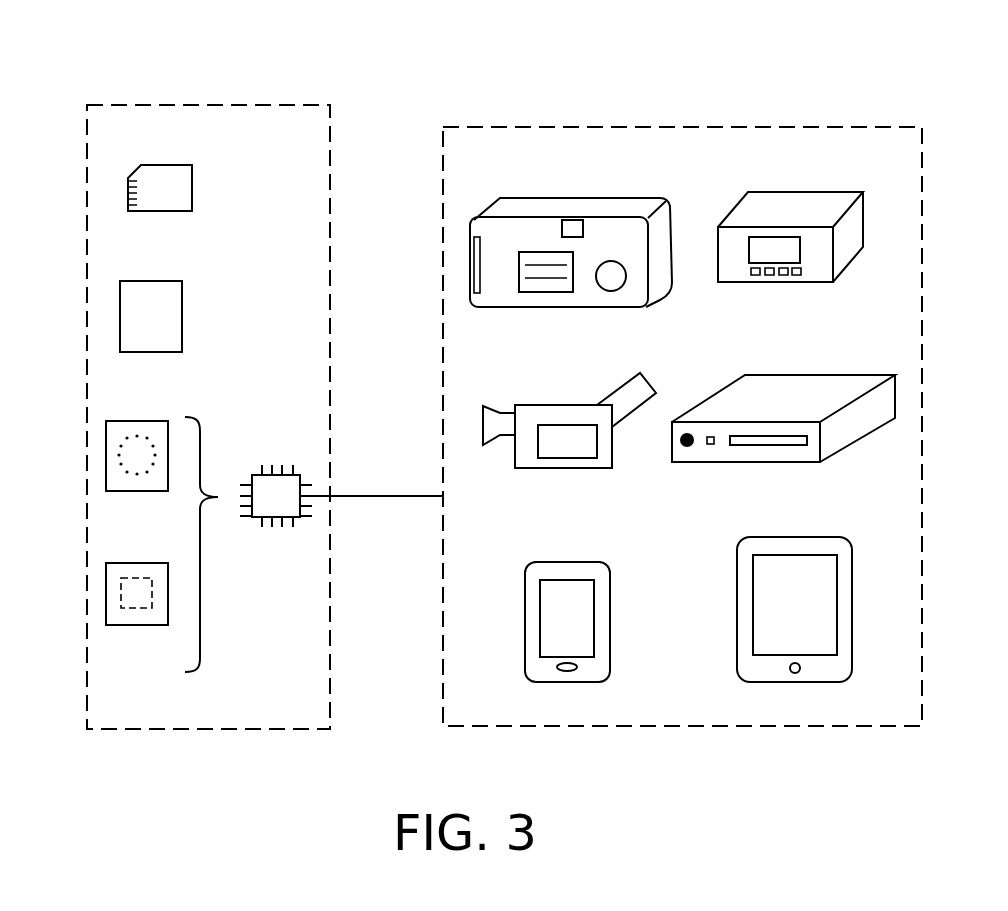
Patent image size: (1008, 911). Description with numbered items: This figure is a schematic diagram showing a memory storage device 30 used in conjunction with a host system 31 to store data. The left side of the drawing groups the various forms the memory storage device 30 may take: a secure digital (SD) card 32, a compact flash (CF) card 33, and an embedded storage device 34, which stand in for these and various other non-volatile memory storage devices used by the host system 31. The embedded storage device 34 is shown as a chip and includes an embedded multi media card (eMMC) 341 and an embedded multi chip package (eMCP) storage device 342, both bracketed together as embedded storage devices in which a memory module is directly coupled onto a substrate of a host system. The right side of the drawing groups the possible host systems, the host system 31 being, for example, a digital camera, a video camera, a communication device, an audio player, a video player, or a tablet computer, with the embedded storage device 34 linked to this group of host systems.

The memory storage device 30 is at (197, 104).
The host system 31 is at (605, 127).
The secure digital (SD) card 32 is at (128, 193).
The compact flash (CF) card 33 is at (120, 317).
The embedded storage device 34 is at (277, 466).
The embedded multi media card (eMMC) 341 is at (106, 458).
The embedded multi chip package (eMCP) storage device 342 is at (106, 595).